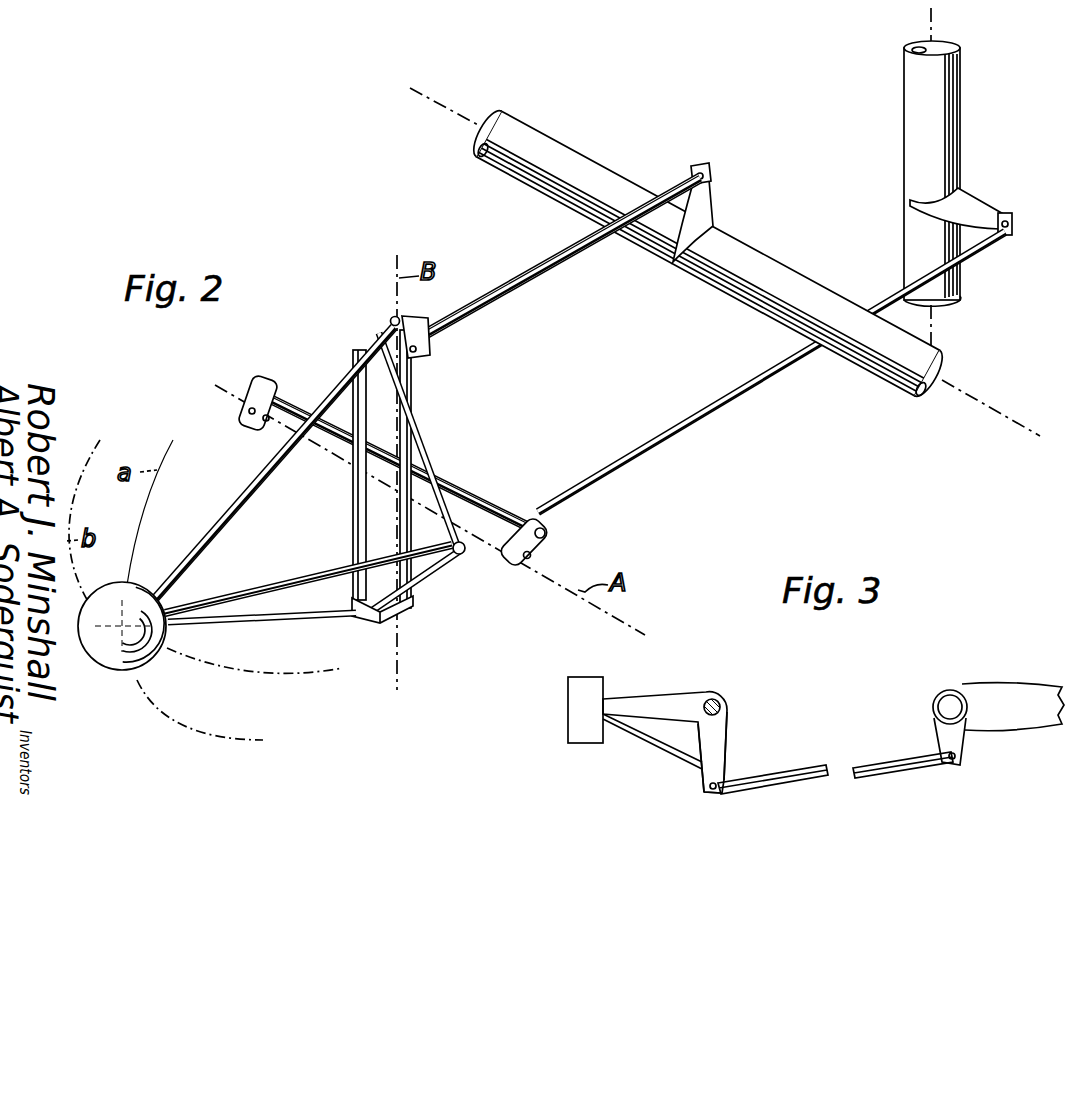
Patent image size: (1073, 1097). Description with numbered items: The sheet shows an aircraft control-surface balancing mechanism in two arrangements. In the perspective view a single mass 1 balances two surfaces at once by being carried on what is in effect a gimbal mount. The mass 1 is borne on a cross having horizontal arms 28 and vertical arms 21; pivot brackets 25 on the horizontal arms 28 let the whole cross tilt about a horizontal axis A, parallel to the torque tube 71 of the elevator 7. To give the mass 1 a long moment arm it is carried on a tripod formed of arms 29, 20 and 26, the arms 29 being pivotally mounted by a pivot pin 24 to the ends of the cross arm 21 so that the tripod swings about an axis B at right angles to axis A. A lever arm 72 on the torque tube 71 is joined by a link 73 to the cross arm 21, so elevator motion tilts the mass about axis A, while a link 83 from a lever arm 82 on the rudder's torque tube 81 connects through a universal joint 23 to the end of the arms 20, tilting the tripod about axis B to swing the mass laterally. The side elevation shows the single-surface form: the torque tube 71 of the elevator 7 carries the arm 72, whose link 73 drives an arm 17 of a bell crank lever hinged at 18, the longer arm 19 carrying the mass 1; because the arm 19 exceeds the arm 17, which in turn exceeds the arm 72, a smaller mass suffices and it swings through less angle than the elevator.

In FIG. 2, the mass 1 is at (100, 650).
In FIG. 3, the mass 1 is at (560, 700).
In FIG. 3, the arm 17 is at (722, 740).
In FIG. 3, the hinge 18 is at (722, 705).
In FIG. 3, the arm 19 is at (663, 703).
In FIG. 2, the arms 20 is at (420, 437).
In FIG. 2, the vertical arms 21 is at (412, 360).
In FIG. 2, the universal joint 23 is at (461, 552).
In FIG. 2, the pivot pin 24 is at (391, 318).
In FIG. 2, the pivot brackets 25 is at (548, 547).
In FIG. 2, the arms 26 is at (317, 578).
In FIG. 2, the horizontal arms 28 is at (477, 500).
In FIG. 2, the arms 29 is at (236, 503).
In FIG. 3, the elevator 7 is at (1020, 695).
In FIG. 2, the torque tube 71 is at (528, 137).
In FIG. 3, the torque tube 71 is at (945, 692).
In FIG. 2, the arm 72 is at (708, 207).
In FIG. 3, the arm 72 is at (940, 736).
In FIG. 2, the link 73 is at (578, 262).
In FIG. 3, the link 73 is at (815, 770).
In FIG. 2, the torque tube 81 is at (914, 97).
In FIG. 2, the lever arm 82 is at (962, 206).
In FIG. 2, the link 83 is at (708, 404).